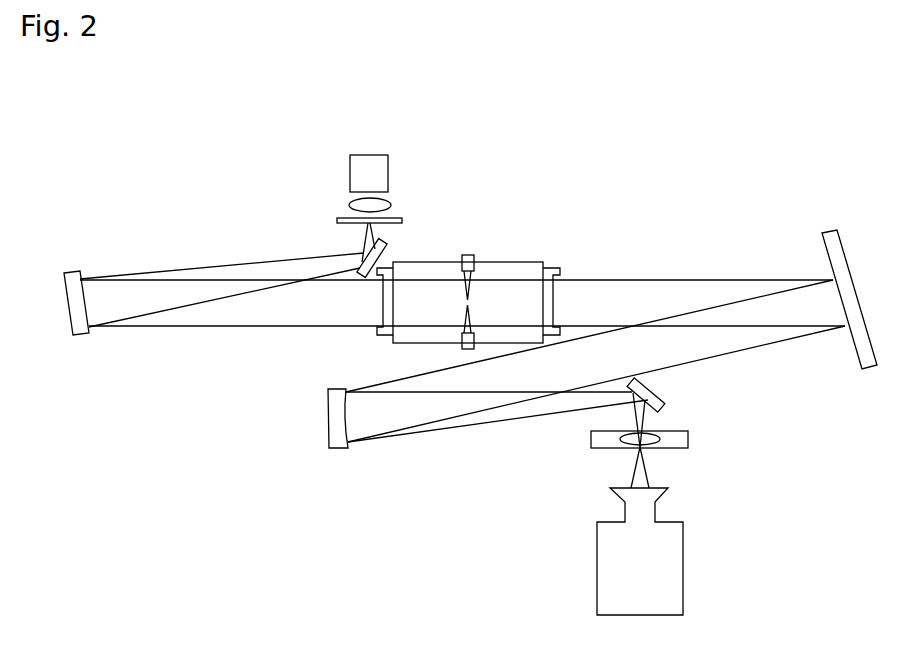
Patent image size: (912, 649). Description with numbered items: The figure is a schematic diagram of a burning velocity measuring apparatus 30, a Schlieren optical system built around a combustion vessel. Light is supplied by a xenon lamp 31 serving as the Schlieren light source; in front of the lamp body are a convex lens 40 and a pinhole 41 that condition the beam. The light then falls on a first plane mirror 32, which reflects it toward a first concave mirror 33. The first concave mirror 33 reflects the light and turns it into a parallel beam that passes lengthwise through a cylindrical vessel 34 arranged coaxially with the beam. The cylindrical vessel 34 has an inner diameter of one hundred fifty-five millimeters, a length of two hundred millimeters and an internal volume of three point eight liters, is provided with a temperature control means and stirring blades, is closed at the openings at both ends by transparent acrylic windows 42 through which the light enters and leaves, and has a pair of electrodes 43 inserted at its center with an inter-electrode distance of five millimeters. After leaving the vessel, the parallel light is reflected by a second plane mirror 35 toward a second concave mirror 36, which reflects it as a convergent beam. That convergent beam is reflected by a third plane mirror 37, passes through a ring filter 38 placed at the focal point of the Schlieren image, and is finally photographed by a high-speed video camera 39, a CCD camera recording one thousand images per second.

The burning velocity measuring apparatus 30 is at (534, 150).
The xenon lamp 31 is at (390, 173).
The first plane mirror 32 is at (388, 246).
The first concave mirror 33 is at (84, 337).
The cylindrical vessel 34 is at (523, 260).
The second plane mirror 35 is at (823, 246).
The second concave mirror 36 is at (327, 418).
The third plane mirror 37 is at (670, 393).
The ring filter 38 is at (688, 440).
The high-speed video camera 39 is at (683, 545).
The convex lens 40 is at (348, 203).
The pinhole 41 is at (337, 222).
The transparent acrylic windows 42 is at (381, 308).
The pair of electrodes 43 is at (468, 253).